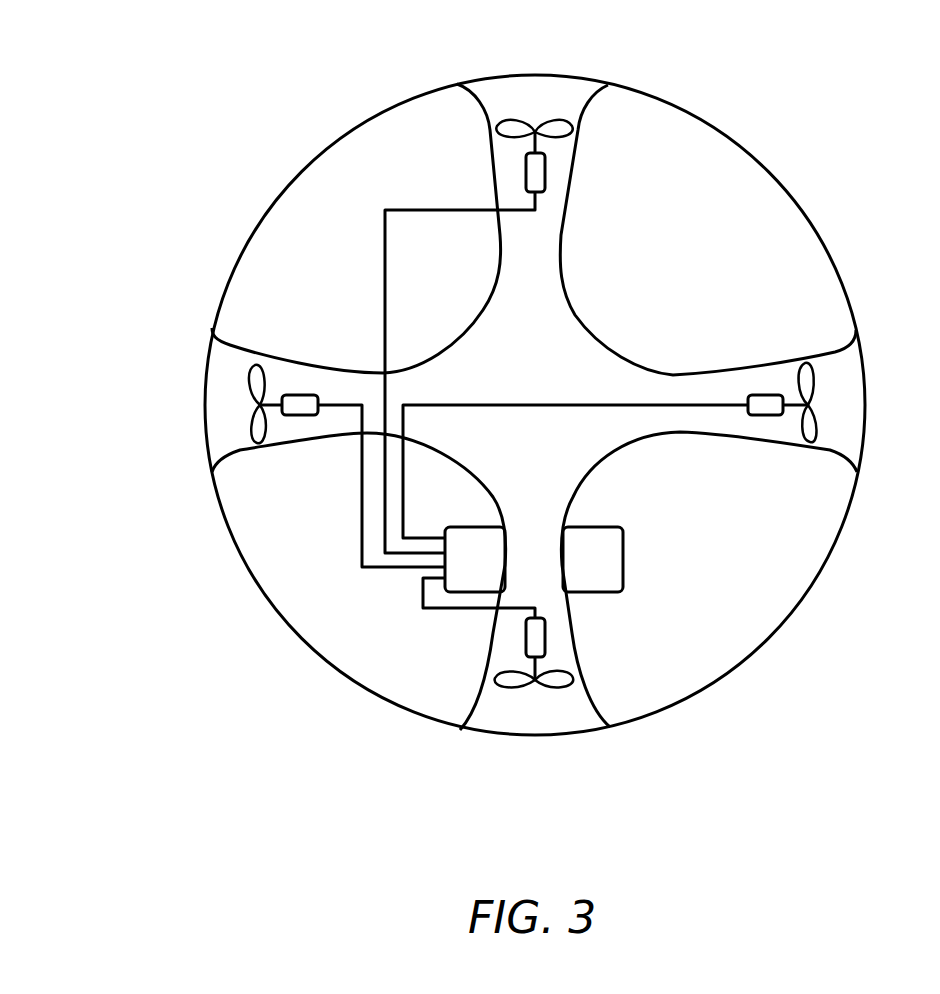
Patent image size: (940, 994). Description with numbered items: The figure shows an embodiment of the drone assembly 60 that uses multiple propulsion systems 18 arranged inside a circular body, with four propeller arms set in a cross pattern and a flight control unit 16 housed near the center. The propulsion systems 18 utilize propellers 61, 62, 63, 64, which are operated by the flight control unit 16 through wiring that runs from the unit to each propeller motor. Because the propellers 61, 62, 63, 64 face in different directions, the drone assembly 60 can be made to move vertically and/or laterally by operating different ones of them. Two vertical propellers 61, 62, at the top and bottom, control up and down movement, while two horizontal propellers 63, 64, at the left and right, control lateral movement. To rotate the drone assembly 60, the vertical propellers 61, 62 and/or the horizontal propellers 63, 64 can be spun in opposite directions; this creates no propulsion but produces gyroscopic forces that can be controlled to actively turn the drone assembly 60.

The flight control unit 16 is at (623, 558).
The propulsion system 18 is at (563, 115).
The drone assembly 60 is at (820, 203).
The vertical propeller 61 is at (564, 102).
The vertical propeller 62 is at (560, 688).
The horizontal propeller 63 is at (813, 393).
The horizontal propeller 64 is at (257, 393).